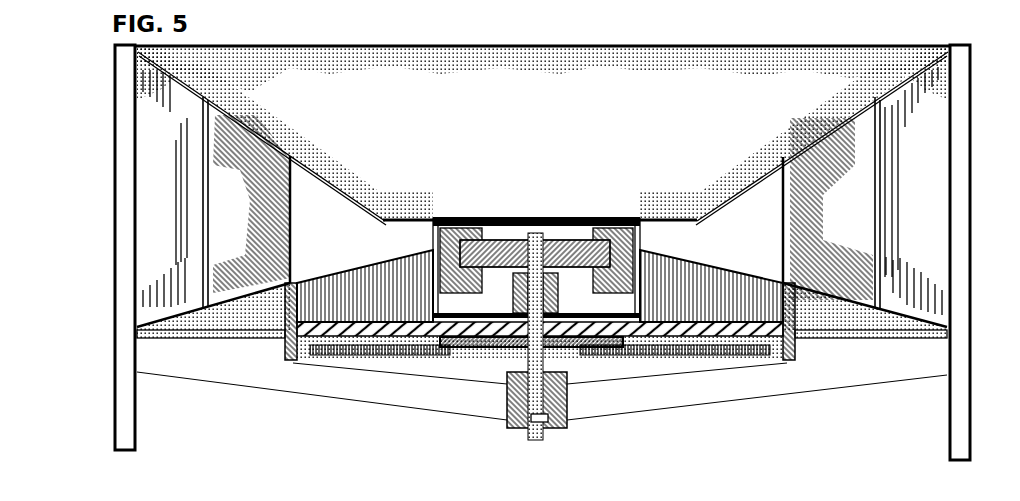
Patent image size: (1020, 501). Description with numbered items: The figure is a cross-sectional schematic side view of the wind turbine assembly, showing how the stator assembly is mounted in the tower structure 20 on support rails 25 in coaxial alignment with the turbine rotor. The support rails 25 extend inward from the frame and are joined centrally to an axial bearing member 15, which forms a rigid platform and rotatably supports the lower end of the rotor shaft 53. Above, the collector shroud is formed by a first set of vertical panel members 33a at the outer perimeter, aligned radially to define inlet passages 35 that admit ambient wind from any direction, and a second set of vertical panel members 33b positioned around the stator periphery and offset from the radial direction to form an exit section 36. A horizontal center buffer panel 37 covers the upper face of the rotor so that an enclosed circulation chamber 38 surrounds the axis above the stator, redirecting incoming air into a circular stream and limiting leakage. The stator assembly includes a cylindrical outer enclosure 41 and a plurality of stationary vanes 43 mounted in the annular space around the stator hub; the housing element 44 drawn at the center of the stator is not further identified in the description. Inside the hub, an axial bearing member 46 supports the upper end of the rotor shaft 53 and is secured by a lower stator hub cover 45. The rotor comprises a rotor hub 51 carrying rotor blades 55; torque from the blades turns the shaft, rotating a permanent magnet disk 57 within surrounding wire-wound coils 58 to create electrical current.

The axial bearing member 15 is at (562, 422).
The tower structure 20 is at (146, 372).
The support rails 25 is at (237, 360).
The first set of vertical panel members 33a is at (167, 171).
The second set of vertical panel members 33b is at (240, 150).
The inlet passages 35 is at (160, 229).
The exit section 36 is at (242, 245).
The horizontal center buffer panel 37 is at (416, 219).
The circulation chamber 38 is at (347, 211).
The cylindrical outer enclosure 41 is at (296, 362).
The stationary vanes 43 is at (368, 306).
The central housing 44 is at (497, 217).
The lower stator hub cover 45 is at (576, 292).
The axial bearing member 46 is at (490, 342).
The rotor hub 51 is at (598, 347).
The rotor shaft 53 is at (533, 383).
The rotor blades 55 is at (707, 345).
The magnet disk 57 is at (460, 247).
The wire-wound coils 58 is at (632, 249).